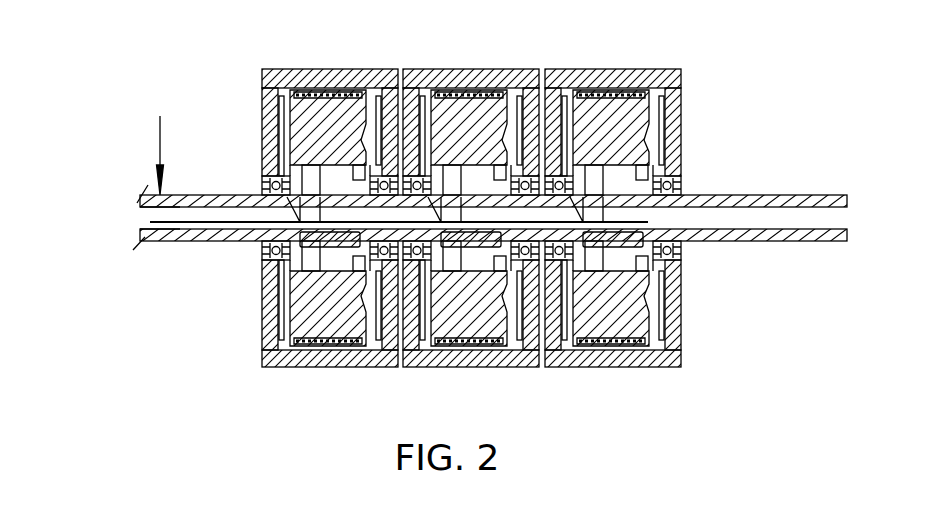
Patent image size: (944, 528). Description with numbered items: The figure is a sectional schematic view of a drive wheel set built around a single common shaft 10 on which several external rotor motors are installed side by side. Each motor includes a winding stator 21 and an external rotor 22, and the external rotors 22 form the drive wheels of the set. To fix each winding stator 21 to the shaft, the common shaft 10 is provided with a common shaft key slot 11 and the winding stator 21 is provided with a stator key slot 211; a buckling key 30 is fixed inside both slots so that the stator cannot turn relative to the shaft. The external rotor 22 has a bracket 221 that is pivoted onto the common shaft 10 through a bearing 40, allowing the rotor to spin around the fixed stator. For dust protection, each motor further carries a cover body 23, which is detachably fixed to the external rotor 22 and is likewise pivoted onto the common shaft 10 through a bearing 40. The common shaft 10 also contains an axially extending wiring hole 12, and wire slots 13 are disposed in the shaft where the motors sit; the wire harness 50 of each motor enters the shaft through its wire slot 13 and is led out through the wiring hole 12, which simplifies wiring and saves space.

The common shaft 10 is at (162, 143).
The common shaft key slot 11 is at (610, 231).
The wiring hole 12 is at (160, 213).
The wire slot 13 is at (257, 236).
The winding stator 21 is at (657, 218).
The stator key slot 211 is at (613, 325).
The external rotor 22 is at (330, 54).
The bracket 221 is at (345, 180).
The cover body 23 is at (243, 132).
The buckling key 30 is at (645, 218).
The bearing 40 is at (303, 203).
The wire harness 50 is at (168, 223).